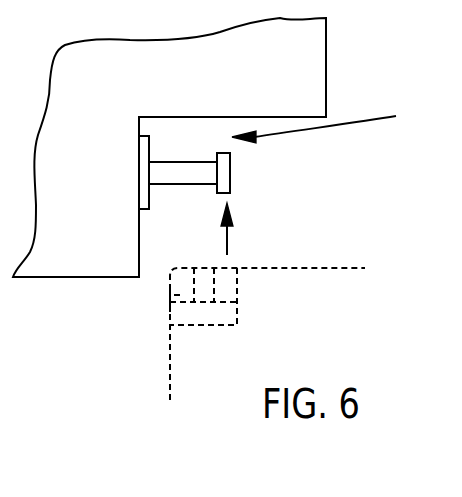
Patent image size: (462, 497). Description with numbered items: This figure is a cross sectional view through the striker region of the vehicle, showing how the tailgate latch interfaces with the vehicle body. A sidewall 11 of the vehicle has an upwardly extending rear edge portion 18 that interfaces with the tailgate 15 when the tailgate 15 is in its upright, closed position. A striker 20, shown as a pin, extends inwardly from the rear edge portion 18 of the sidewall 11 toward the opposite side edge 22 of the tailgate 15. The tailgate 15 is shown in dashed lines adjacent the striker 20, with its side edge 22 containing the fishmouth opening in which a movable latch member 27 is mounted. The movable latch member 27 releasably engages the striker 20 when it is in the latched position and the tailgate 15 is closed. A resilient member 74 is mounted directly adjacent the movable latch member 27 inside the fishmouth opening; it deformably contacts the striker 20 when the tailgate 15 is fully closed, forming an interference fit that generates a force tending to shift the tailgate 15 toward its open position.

The sidewall 11 is at (326, 63).
The rear edge portion 18 is at (332, 123).
The striker 20 is at (222, 172).
The tailgate 15 is at (327, 268).
The resilient member 74 is at (237, 317).
The movable latch member 27 is at (183, 295).
The side edge 22 is at (168, 300).